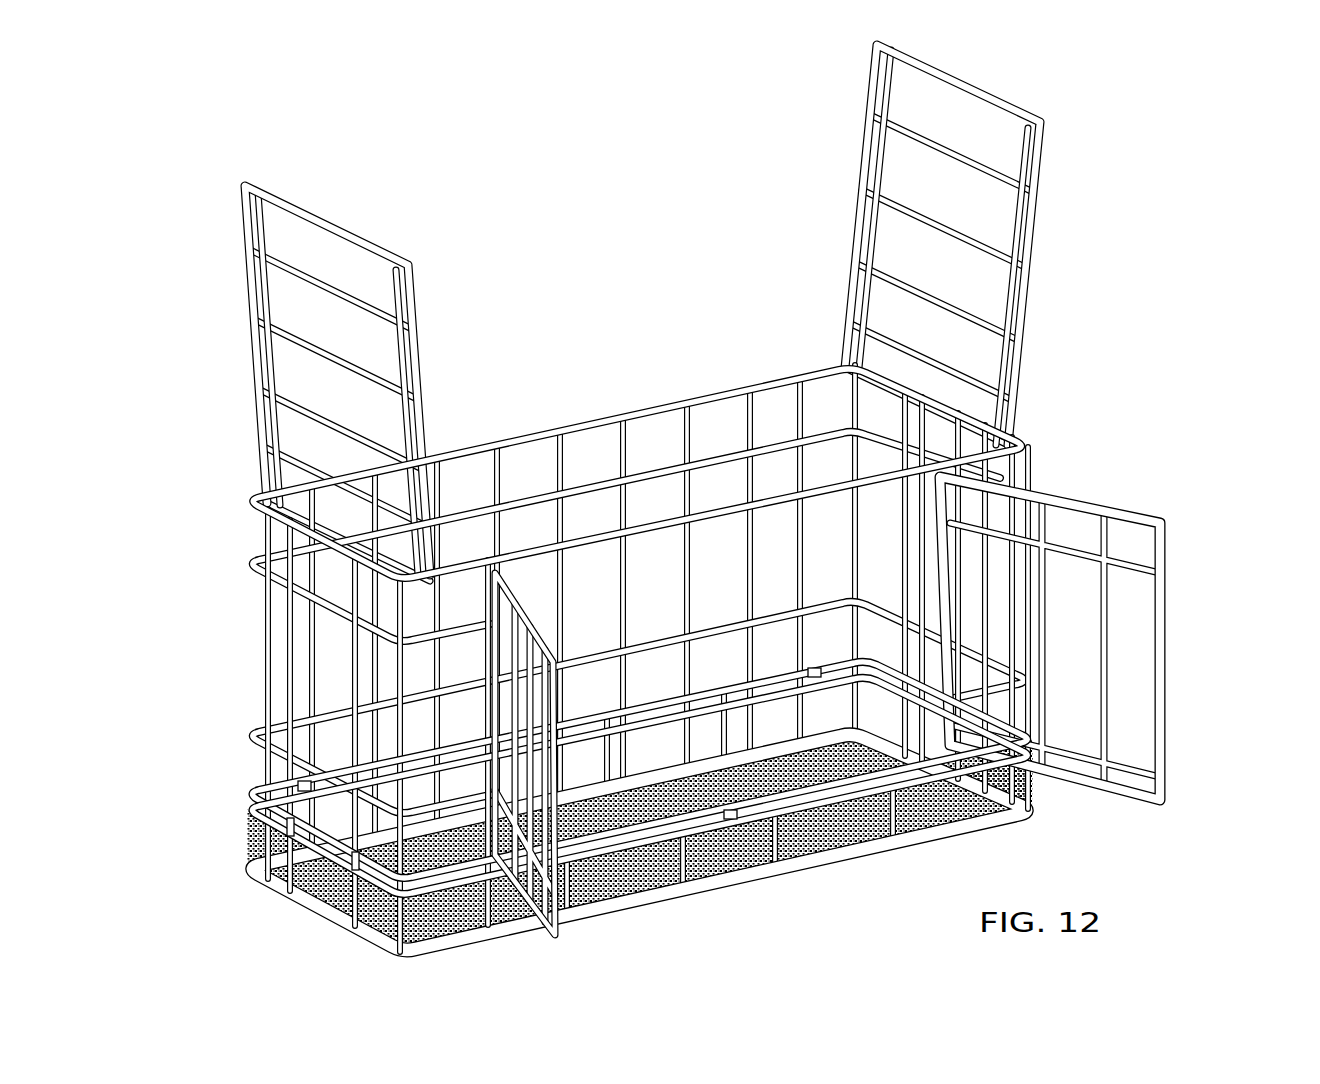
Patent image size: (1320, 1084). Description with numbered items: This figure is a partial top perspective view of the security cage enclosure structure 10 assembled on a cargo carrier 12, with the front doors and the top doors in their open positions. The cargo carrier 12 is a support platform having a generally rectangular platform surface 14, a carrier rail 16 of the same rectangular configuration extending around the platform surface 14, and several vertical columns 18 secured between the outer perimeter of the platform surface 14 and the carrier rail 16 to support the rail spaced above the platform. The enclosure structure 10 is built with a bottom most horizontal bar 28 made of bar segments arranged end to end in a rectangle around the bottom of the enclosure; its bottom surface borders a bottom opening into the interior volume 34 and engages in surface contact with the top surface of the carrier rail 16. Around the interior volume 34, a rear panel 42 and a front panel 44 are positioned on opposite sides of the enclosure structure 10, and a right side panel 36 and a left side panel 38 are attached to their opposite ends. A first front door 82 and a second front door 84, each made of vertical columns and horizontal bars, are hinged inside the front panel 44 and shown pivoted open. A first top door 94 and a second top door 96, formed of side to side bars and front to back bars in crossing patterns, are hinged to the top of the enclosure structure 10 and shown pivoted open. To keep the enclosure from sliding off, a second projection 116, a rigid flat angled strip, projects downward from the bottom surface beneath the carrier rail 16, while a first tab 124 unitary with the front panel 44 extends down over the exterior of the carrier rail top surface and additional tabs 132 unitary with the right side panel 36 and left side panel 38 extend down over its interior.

The security cage enclosure structure 10 is at (701, 503).
The cargo carrier 12 is at (268, 913).
The platform surface 14 is at (845, 835).
The carrier rail 16 is at (250, 812).
The vertical columns 18 is at (287, 840).
The bottom bar 28 is at (290, 795).
The interior volume 34 is at (656, 496).
The right side panel 36 is at (686, 473).
The left side panel 38 is at (260, 500).
The rear panel 42 is at (572, 419).
The front panel 44 is at (776, 496).
The first front door 82 is at (1174, 645).
The second front door 84 is at (567, 936).
The first top door 94 is at (1040, 327).
The second top door 96 is at (254, 352).
The second projection 116 is at (291, 837).
The first tab 124 is at (735, 822).
The additional tabs 132 is at (815, 680).